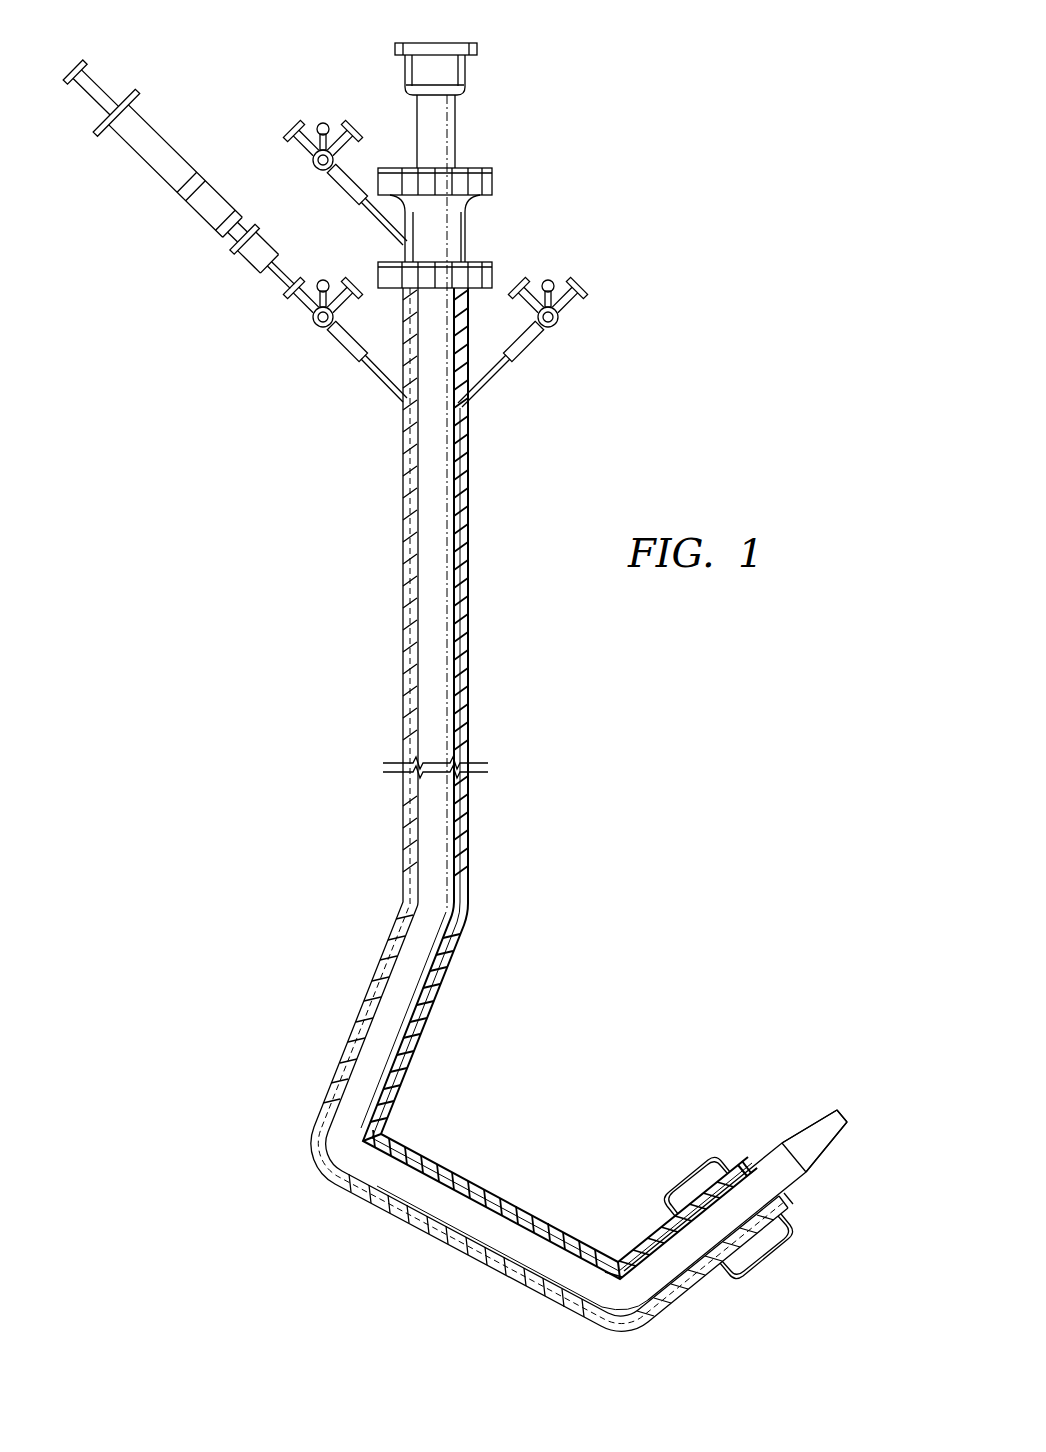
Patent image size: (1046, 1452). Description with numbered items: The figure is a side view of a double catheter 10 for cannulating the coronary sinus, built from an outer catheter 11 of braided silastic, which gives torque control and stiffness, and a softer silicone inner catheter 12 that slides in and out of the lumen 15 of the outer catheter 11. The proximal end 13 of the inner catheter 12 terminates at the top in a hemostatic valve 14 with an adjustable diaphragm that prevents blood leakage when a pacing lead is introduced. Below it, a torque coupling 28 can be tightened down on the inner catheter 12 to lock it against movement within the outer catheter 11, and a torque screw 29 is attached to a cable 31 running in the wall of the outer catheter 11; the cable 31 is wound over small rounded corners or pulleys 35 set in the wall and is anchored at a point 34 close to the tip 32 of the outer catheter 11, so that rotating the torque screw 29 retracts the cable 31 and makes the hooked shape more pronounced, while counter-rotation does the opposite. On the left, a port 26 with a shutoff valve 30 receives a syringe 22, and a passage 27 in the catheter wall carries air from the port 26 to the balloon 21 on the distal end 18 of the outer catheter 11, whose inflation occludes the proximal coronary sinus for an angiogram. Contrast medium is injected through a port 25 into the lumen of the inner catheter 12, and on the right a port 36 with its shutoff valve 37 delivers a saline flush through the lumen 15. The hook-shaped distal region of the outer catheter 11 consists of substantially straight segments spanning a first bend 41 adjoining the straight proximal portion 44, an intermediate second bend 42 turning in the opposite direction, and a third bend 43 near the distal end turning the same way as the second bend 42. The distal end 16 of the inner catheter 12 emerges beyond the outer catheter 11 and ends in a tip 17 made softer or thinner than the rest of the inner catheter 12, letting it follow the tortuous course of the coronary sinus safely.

The double catheter 10 is at (276, 551).
The outer catheter 11 is at (402, 510).
The inner catheter 12 is at (457, 118).
The proximal end 13 is at (406, 41).
The hemostatic valve 14 is at (405, 70).
The lumen 15 is at (440, 462).
The distal end 16 is at (850, 1117).
The tip 17 is at (820, 1122).
The distal end 18 is at (758, 1150).
The balloon 21 is at (690, 1178).
The syringe 22 is at (160, 120).
The port 25 is at (335, 190).
The port 26 is at (343, 358).
The passage 27 is at (368, 995).
The torque coupling 28 is at (493, 180).
The torque screw 29 is at (495, 270).
The shutoff valve 30 is at (313, 325).
The cable 31 is at (470, 540).
The tip 32 is at (796, 1200).
The point 34 is at (742, 1163).
The pulleys 35 is at (380, 1135).
The port 36 is at (530, 345).
The shutoff valve 37 is at (565, 320).
The first bend 41 is at (470, 915).
The second bend 42 is at (320, 1158).
The third bend 43 is at (636, 1325).
The proximal portion 44 is at (472, 622).